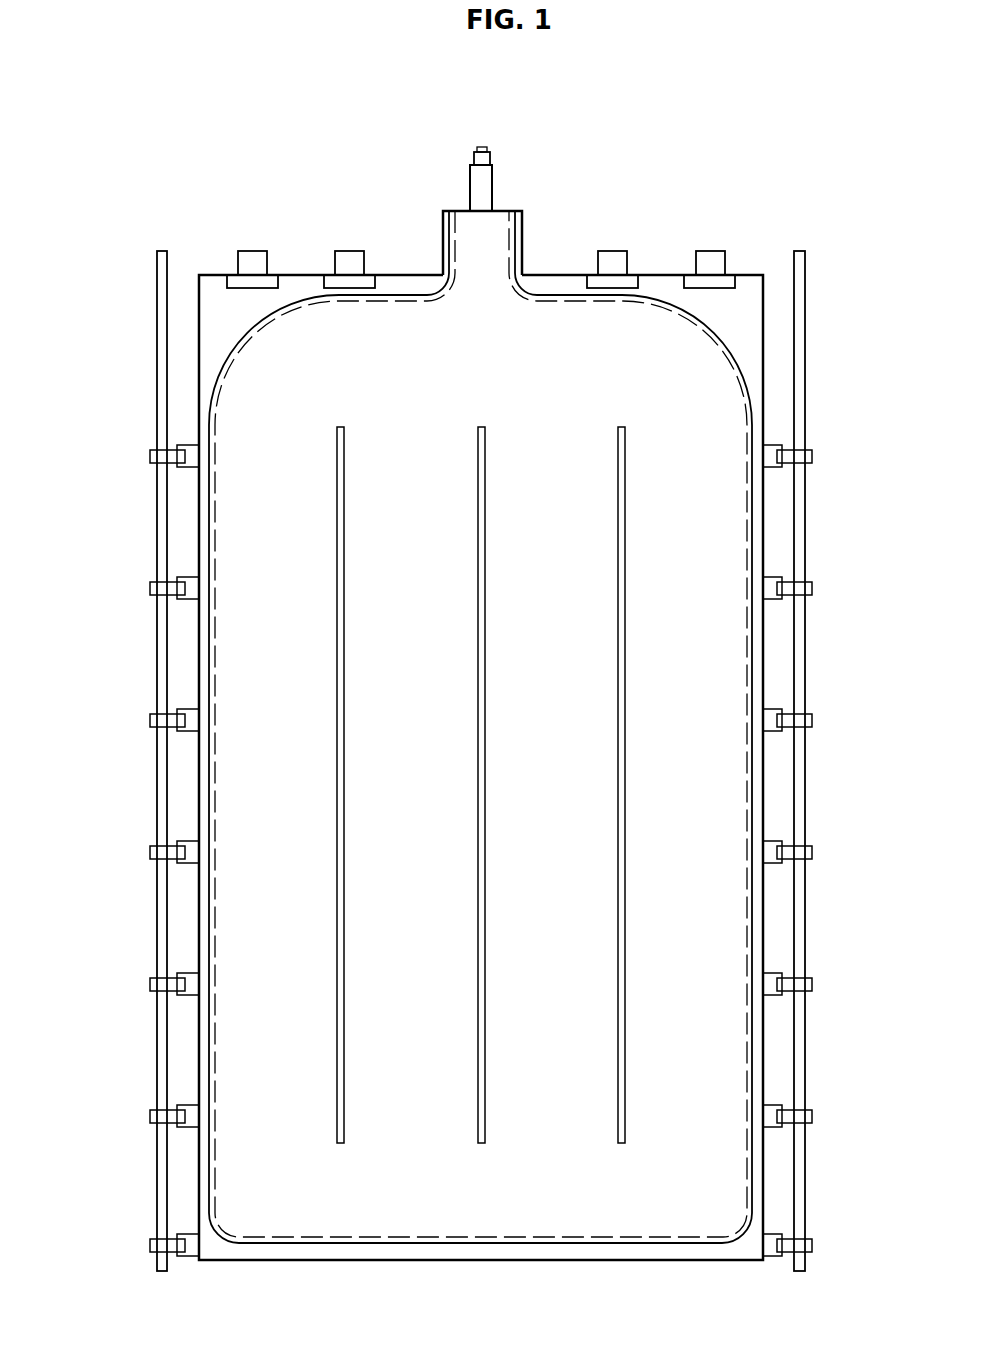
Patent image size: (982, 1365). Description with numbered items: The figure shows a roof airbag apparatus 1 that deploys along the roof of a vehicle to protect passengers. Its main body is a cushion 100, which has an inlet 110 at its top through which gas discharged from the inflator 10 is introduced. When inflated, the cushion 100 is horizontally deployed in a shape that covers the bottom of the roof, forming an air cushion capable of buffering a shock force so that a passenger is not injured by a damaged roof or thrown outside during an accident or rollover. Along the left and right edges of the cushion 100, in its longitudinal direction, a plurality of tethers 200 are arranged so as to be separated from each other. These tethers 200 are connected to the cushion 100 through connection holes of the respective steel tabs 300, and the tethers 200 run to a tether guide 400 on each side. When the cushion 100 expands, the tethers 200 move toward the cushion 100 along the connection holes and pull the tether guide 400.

The roof airbag apparatus 1 is at (802, 174).
The inflator 10 is at (481, 186).
The inlet 110 is at (496, 236).
The cushion 100 is at (647, 330).
The tethers 200 is at (197, 467).
The steel tabs 300 is at (152, 453).
The tether guide 400 is at (162, 372).